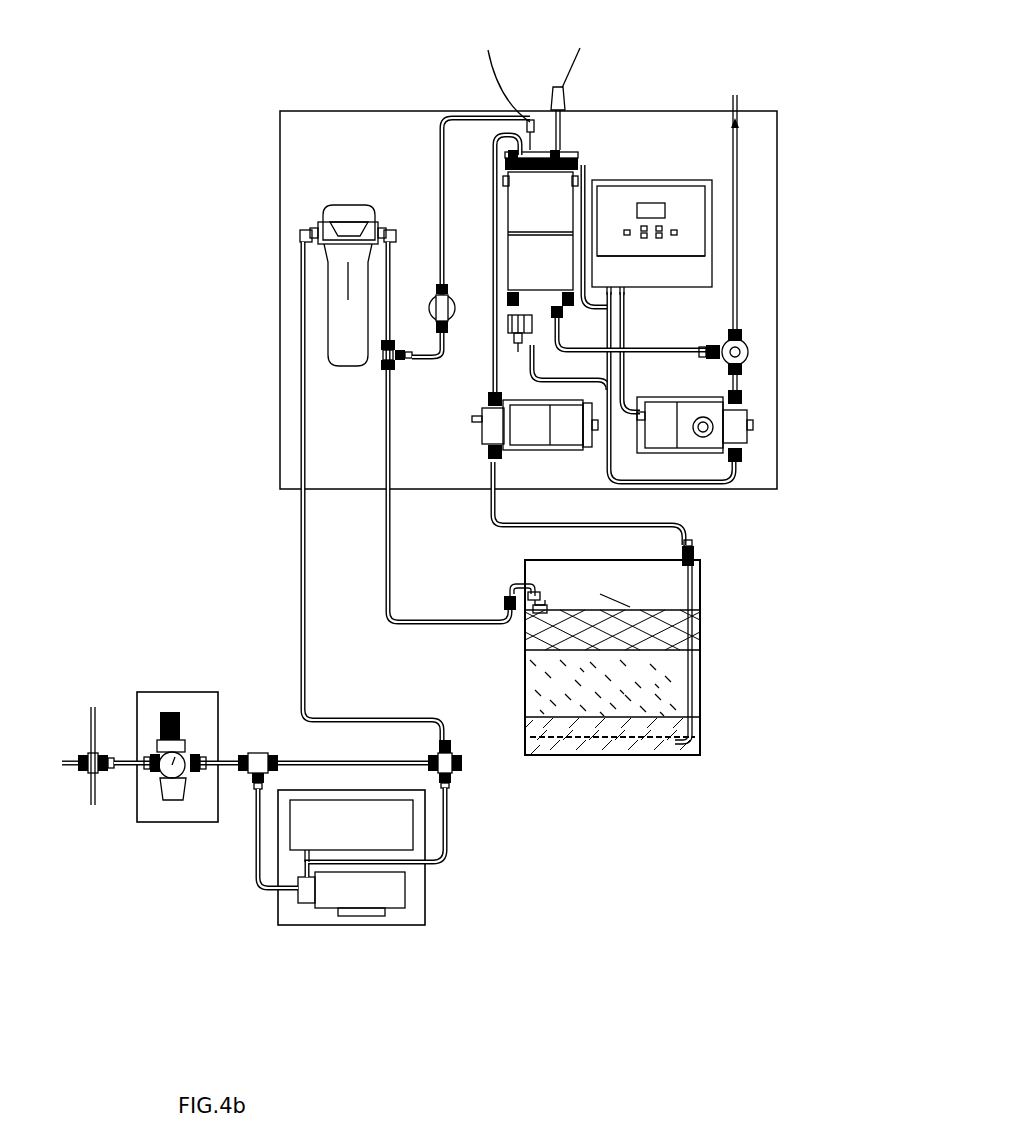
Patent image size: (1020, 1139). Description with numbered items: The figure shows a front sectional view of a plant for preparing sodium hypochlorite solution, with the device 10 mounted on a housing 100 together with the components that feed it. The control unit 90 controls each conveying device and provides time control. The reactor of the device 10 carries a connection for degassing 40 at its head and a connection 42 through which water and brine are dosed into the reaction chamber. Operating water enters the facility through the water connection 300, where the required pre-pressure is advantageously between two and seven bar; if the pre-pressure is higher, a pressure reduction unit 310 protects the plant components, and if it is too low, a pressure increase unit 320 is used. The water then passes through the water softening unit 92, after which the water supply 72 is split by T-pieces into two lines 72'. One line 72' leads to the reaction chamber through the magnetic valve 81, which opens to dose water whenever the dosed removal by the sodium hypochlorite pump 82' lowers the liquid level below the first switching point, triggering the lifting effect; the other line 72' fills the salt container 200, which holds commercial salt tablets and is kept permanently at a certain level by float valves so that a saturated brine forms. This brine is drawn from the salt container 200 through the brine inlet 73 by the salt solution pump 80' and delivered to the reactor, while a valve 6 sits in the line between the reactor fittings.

The housing 100 is at (285, 150).
The device 10 is at (506, 216).
The connection for degassing 40 is at (572, 87).
The connection for dosing of water or salt solution 42 is at (499, 79).
The water inlet 72 is at (317, 493).
The water inlet line 72' is at (355, 321).
The brine inlet 73 is at (645, 522).
The magnetic valve 81 is at (432, 297).
The water softening unit 92 is at (340, 325).
The pump for salt solution 80' is at (399, 297).
The pump for sodium hypochlorite 82' is at (749, 429).
The valve 6 is at (748, 350).
The control unit 90 is at (690, 218).
The salt container 200 is at (700, 650).
The operating water supply line 300 is at (88, 765).
The pressure reduction unit 310 is at (155, 712).
The pressure increase unit 320 is at (378, 888).